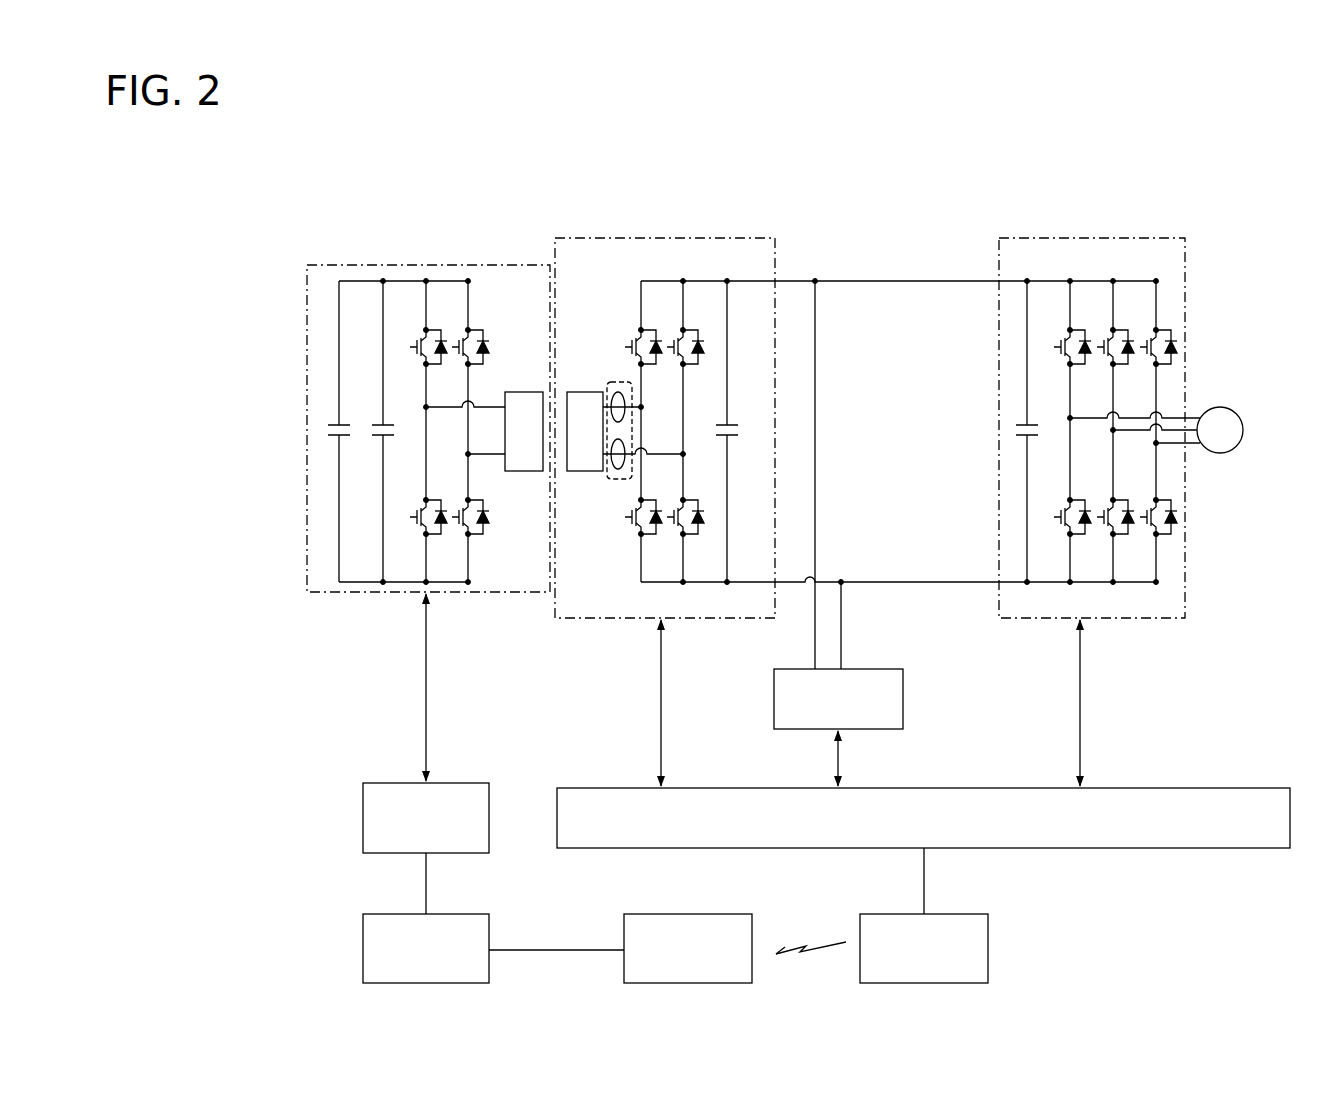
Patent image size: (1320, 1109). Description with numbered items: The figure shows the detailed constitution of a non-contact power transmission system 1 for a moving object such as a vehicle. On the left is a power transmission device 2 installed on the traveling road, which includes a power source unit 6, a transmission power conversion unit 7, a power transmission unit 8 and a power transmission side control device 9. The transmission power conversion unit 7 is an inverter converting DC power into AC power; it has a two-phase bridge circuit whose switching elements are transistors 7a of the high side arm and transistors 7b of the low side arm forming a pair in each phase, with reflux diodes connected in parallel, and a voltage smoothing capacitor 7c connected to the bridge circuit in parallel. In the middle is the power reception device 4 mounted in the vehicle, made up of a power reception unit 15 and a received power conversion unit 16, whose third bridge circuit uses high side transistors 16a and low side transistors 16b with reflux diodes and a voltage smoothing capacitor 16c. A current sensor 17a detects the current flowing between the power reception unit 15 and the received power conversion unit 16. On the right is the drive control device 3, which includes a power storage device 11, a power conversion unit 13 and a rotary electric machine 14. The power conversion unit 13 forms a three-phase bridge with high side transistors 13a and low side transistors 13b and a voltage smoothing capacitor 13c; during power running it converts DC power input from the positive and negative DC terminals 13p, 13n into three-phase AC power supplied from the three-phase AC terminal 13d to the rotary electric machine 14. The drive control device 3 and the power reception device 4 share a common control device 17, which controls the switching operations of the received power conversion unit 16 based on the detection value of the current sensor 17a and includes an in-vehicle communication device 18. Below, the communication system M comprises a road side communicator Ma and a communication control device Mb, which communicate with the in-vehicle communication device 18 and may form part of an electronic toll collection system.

The non-contact power transmission system 1 is at (1210, 152).
The power transmission device 2 is at (512, 234).
The drive control device 3 is at (1181, 190).
The power reception device 4 is at (749, 238).
The power source unit 6 is at (342, 427).
The transmission power conversion unit 7 is at (418, 417).
The transistor of high side arm 7a is at (465, 332).
The transistor of low side arm 7b is at (466, 536).
The voltage smoothing capacitor 7c is at (386, 427).
The power transmission unit 8 is at (515, 392).
The power transmission side control device 9 is at (473, 783).
The power storage device 11 is at (903, 696).
The power conversion unit 13 is at (1120, 466).
The transistor of high side arm 13a is at (1157, 332).
The transistor of low side arm 13b is at (1157, 536).
The voltage smoothing capacitor 13c is at (1030, 424).
The three-phase AC terminal 13d is at (1070, 418).
The negative DC terminal 13n is at (1027, 584).
The positive DC terminal 13p is at (1028, 280).
The rotary electric machine 14 is at (1220, 407).
The power reception unit 15 is at (573, 392).
The received power conversion unit 16 is at (860, 448).
The transistor of high side arm 16a is at (684, 332).
The transistor of low side arm 16b is at (682, 500).
The voltage smoothing capacitor 16c is at (730, 424).
The control device 17 is at (1262, 788).
The current sensor 17a is at (617, 382).
The in-vehicle communication device 18 is at (988, 945).
The communication system M is at (604, 918).
The road side communicator Ma is at (746, 914).
The communication control device Mb is at (471, 914).